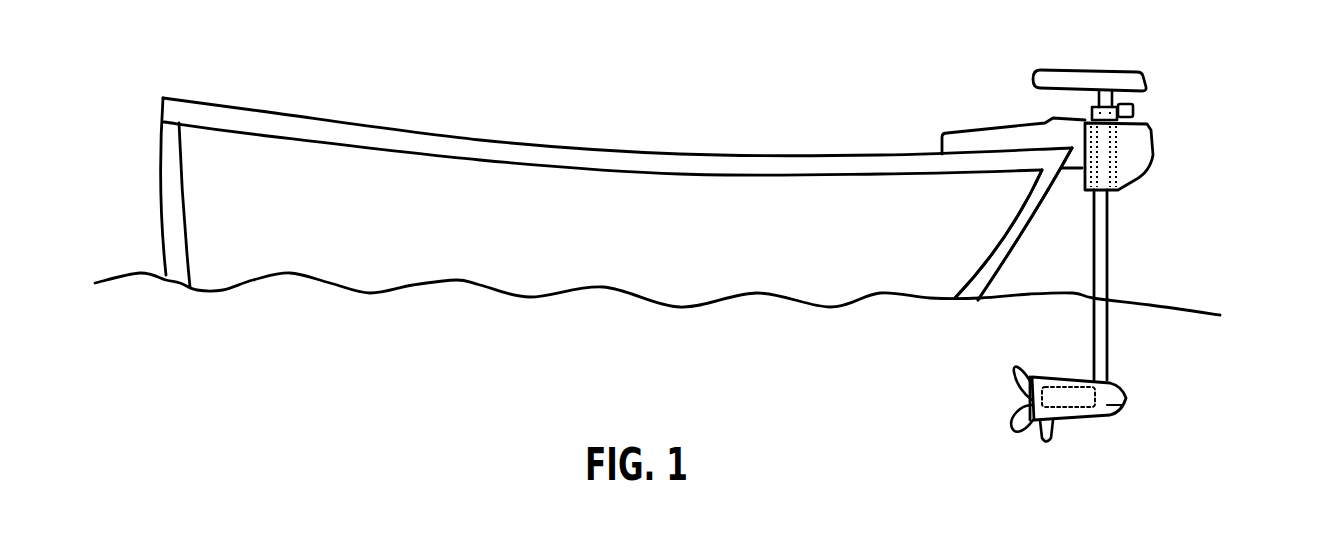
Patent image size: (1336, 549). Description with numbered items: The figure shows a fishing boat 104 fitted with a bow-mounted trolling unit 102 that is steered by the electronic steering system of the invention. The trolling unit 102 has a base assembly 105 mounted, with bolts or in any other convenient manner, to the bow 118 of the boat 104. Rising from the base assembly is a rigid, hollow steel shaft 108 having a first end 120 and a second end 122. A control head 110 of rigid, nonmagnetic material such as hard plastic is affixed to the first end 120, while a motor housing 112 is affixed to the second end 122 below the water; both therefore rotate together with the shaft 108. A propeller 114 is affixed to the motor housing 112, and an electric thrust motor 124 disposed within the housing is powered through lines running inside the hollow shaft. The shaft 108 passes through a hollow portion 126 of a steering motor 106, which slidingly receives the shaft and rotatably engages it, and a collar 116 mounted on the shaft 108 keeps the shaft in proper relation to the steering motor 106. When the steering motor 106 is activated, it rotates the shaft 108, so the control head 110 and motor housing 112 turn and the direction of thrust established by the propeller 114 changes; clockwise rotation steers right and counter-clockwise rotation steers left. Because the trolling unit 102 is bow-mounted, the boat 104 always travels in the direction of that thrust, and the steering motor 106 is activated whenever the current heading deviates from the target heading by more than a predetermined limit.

The trolling unit 102 is at (1212, 126).
The fishing boat 104 is at (663, 200).
The base assembly 105 is at (997, 135).
The steering motor 106 is at (1133, 158).
The shaft 108 is at (1107, 277).
The control head 110 is at (1141, 58).
The motor housing 112 is at (1126, 404).
The propeller 114 is at (1029, 430).
The collar 116 is at (1135, 112).
The bow 118 is at (980, 228).
The first end 120 is at (1117, 103).
The second end 122 is at (1110, 380).
The electric thrust motor 124 is at (1062, 420).
The hollow portion 126 is at (1113, 170).